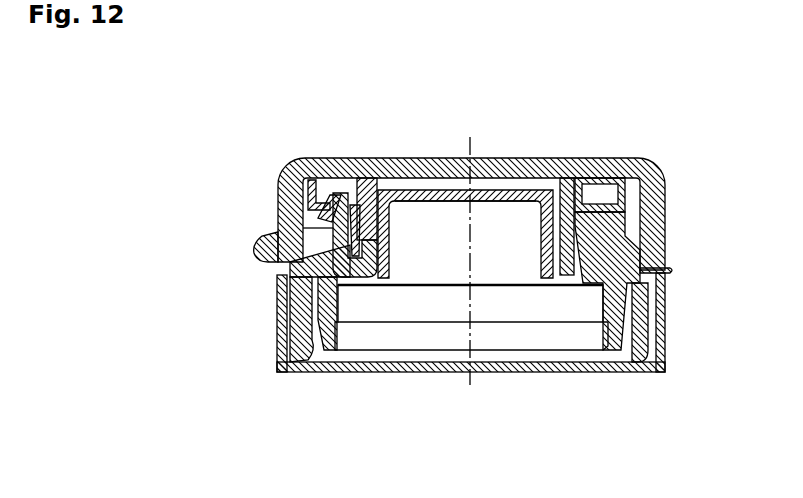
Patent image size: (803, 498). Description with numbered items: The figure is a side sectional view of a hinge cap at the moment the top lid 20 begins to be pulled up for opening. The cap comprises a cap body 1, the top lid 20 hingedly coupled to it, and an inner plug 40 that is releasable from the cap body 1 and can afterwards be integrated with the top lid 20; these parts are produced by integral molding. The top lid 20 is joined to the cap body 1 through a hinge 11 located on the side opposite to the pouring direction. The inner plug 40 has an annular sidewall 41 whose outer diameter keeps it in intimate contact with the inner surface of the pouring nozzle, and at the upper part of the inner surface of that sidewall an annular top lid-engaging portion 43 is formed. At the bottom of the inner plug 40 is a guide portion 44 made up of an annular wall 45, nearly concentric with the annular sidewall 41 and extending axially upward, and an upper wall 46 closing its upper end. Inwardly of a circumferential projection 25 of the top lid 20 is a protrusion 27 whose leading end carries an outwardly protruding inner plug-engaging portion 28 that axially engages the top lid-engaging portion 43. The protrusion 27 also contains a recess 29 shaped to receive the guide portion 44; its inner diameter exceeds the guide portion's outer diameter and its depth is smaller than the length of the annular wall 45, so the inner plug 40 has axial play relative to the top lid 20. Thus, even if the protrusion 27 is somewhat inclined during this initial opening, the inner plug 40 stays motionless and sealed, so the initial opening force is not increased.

The cap body 1 is at (672, 334).
The hinge 11 is at (672, 270).
The top lid 20 is at (634, 155).
The circumferential projection 25 is at (310, 176).
The protrusion 27 is at (333, 192).
The inner plug-engaging portion 28 is at (287, 221).
The recess 29 is at (418, 188).
The inner plug 40 is at (579, 268).
The annular sidewall 41 is at (362, 241).
The top lid-engaging portion 43 is at (356, 191).
The guide portion 44 is at (447, 190).
The annular wall 45 is at (393, 258).
The upper wall 46 is at (520, 192).